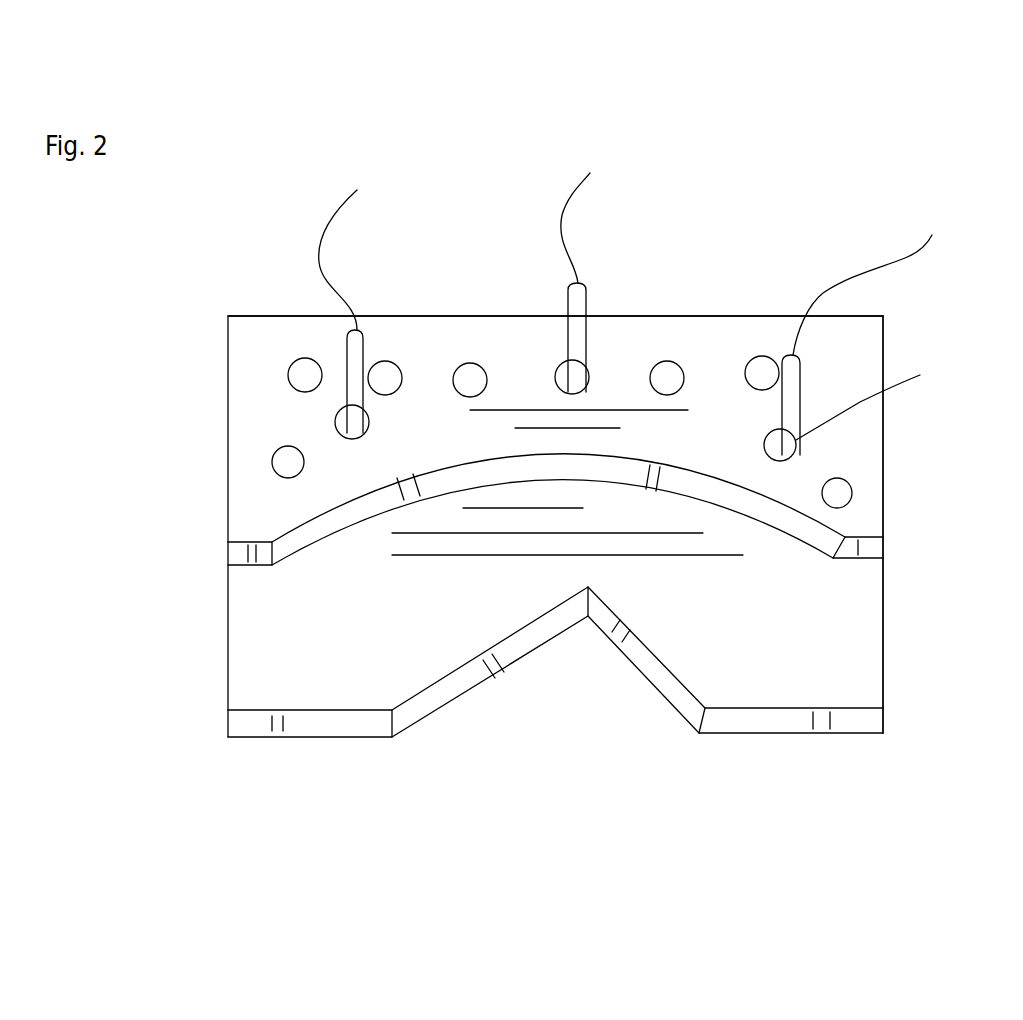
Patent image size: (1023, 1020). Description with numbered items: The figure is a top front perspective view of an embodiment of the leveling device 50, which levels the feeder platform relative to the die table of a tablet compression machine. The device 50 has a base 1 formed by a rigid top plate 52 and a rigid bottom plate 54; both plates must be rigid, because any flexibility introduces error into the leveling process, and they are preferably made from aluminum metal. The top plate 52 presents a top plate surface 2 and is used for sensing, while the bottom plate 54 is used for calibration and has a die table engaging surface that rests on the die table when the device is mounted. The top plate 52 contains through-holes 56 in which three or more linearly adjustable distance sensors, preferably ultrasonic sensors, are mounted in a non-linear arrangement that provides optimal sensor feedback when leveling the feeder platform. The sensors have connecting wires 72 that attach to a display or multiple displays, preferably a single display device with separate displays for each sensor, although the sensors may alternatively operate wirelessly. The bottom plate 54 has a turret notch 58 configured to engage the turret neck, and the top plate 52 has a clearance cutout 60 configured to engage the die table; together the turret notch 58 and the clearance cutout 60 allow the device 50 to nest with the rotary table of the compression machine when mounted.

The base 1 is at (255, 152).
The top plate surface 2 is at (273, 332).
The leveling device 50 is at (555, 185).
The top plate 52 is at (665, 329).
The bottom plate 54 is at (917, 524).
The through-holes 56 is at (905, 424).
The turret notch 58 is at (555, 701).
The clearance cutout 60 is at (499, 574).
The connecting wires 72 is at (362, 353).